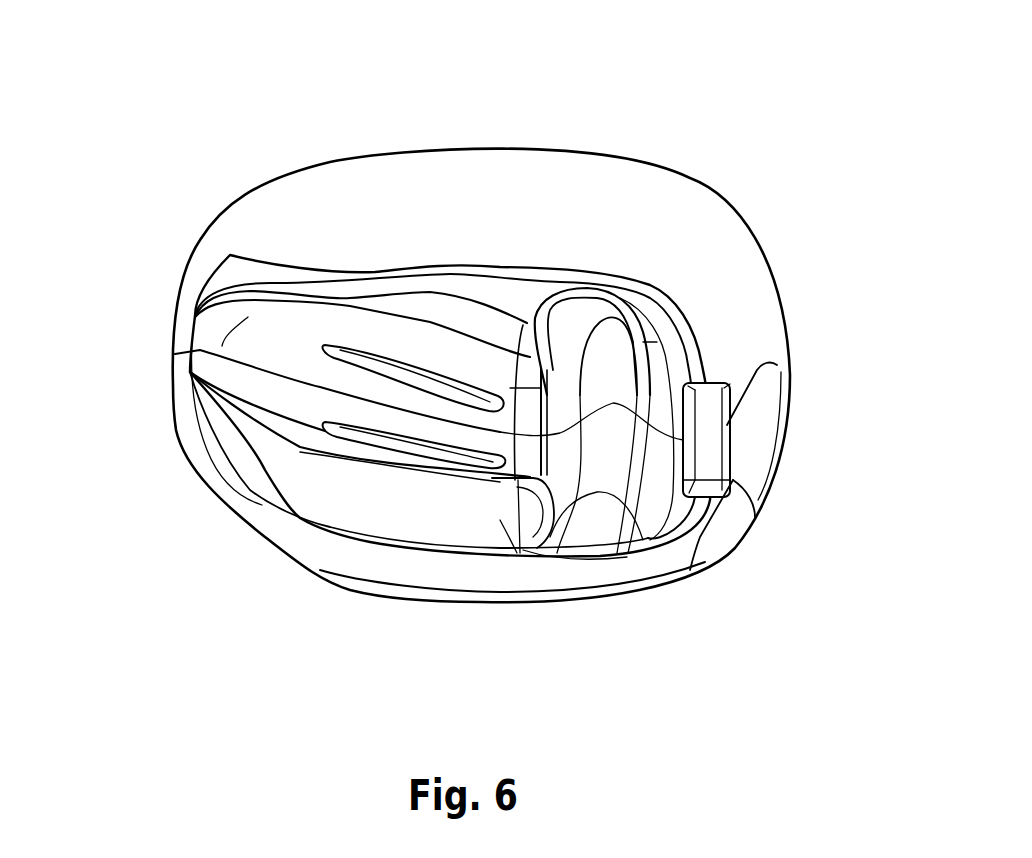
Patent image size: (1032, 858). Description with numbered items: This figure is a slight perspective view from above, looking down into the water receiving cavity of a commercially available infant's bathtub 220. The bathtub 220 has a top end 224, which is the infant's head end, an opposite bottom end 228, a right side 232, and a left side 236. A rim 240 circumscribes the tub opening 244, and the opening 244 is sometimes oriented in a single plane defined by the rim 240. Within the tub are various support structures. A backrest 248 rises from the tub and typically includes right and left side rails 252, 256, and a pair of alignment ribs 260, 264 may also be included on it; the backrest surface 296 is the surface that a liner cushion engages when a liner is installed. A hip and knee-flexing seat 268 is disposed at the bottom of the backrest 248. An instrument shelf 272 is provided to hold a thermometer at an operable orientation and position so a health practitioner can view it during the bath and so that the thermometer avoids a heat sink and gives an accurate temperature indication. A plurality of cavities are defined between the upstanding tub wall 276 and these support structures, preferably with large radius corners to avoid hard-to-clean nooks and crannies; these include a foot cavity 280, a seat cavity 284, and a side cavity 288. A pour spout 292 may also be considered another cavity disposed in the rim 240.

The infant's bathtub 220 is at (349, 133).
The top end 224 is at (142, 377).
The bottom end 228 is at (817, 322).
The right side 232 is at (567, 125).
The left side 236 is at (445, 618).
The rim 240 is at (627, 573).
The tub opening 244 is at (487, 368).
The backrest 248 is at (250, 392).
The right side rail 252 is at (457, 320).
The left side rail 256 is at (488, 527).
The alignment rib 260 is at (368, 355).
The alignment rib 264 is at (367, 435).
The hip and knee-flexing seat 268 is at (591, 307).
The instrument shelf 272 is at (708, 437).
The upstanding tub wall 276 is at (412, 202).
The foot cavity 280 is at (677, 247).
The seat cavity 284 is at (540, 365).
The side cavity 288 is at (323, 243).
The pour spout 292 is at (733, 520).
The tub backrest surface 296 is at (248, 317).